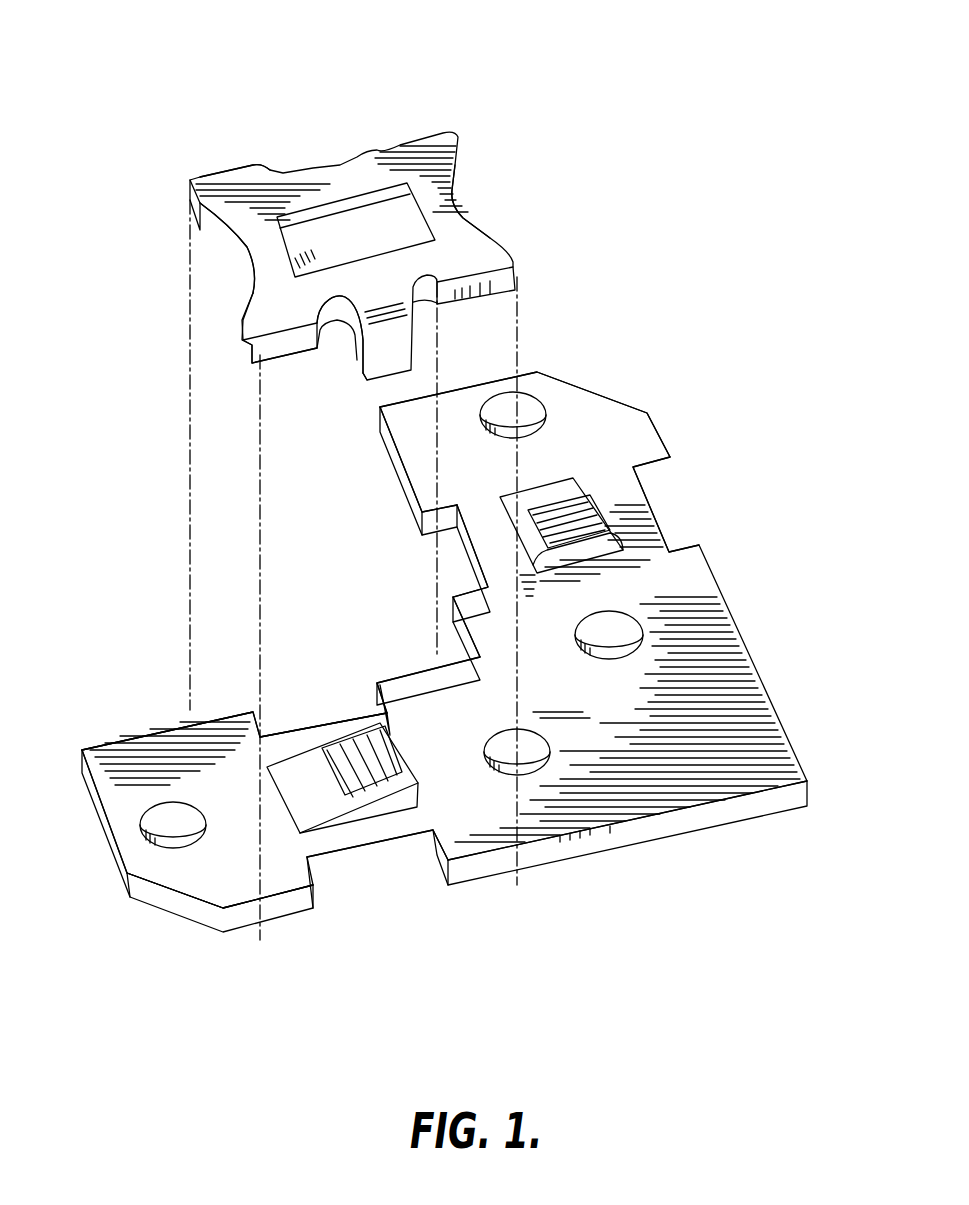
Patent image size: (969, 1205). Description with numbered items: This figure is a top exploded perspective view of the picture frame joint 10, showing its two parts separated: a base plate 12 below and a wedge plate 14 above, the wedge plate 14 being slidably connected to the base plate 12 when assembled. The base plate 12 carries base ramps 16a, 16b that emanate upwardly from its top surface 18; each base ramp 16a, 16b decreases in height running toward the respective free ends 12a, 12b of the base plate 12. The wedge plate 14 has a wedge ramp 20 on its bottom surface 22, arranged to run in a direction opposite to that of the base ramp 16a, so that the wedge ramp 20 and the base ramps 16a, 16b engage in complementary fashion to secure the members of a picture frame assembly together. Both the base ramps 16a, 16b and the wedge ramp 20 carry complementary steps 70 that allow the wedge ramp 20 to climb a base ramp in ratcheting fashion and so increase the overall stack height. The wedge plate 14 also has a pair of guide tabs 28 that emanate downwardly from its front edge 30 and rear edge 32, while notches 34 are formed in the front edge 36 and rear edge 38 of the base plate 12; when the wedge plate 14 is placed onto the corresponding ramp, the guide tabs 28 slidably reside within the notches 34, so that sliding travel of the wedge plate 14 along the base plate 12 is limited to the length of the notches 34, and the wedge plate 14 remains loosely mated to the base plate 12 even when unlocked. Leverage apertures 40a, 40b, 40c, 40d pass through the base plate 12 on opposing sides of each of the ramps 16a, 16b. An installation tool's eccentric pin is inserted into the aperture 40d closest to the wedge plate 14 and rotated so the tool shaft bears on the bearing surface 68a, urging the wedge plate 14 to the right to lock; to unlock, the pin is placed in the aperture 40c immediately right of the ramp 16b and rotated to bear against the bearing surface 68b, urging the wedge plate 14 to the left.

The picture frame joint 10 is at (652, 265).
The base plate 12 is at (761, 667).
The free end of base plate 12a is at (103, 857).
The free end of base plate 12b is at (493, 377).
The wedge plate 14 is at (437, 130).
The base ramp 16a is at (317, 800).
The base ramp 16b is at (573, 487).
The top surface of base plate 18 is at (223, 870).
The wedge ramp 20 is at (330, 240).
The bottom surface of wedge plate 22 is at (517, 337).
The guide tabs 28 is at (387, 377).
The front edge of wedge plate 30 is at (280, 350).
The rear edge of wedge plate 32 is at (203, 172).
The notches 34 is at (659, 530).
The front edge of base plate 36 is at (567, 852).
The rear edge of base plate 38 is at (157, 733).
The leverage aperture 40a is at (170, 840).
The leverage aperture 40b is at (657, 779).
The leverage aperture 40c is at (639, 639).
The leverage aperture 40d is at (540, 403).
The bearing surface 68a is at (245, 248).
The bearing surface 68b is at (460, 207).
The complementary steps 70 is at (597, 513).